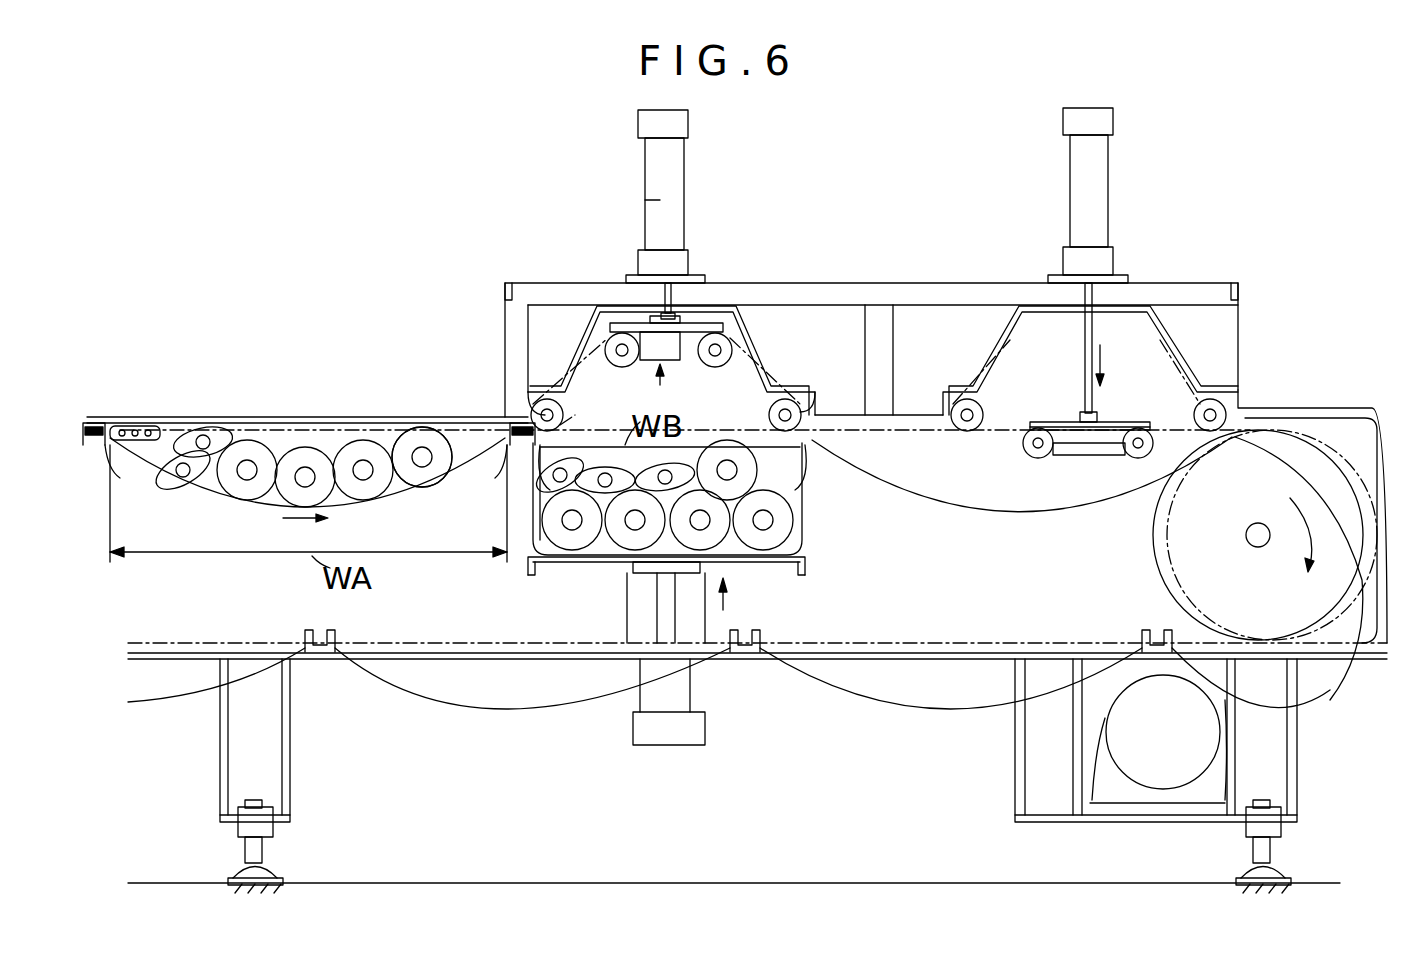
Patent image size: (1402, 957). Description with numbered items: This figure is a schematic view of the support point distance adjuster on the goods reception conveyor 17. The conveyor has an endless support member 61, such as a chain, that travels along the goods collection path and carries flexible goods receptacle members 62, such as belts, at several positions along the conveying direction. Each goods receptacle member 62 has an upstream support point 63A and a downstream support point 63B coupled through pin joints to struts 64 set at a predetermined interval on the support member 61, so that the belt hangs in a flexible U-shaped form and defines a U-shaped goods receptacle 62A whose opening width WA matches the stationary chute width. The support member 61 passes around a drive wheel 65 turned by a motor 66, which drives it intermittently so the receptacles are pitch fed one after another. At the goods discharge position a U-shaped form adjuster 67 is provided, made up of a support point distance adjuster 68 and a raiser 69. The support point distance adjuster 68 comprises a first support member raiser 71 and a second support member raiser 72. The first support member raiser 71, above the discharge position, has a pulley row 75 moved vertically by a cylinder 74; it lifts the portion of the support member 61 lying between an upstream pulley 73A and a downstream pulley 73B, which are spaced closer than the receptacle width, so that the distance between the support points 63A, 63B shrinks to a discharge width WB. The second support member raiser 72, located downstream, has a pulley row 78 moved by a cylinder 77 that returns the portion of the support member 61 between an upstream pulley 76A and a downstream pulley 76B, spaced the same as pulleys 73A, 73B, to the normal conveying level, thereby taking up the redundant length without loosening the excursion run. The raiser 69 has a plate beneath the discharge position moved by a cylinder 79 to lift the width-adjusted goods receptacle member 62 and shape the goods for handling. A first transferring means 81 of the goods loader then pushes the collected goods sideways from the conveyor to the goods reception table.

The goods reception conveyor 17 is at (388, 414).
The endless support member 61 is at (140, 428).
The flexible goods receptacle member 62 is at (200, 472).
The U-shaped goods receptacle 62A is at (460, 472).
The upstream support point 63A is at (500, 455).
The downstream support point 63B is at (113, 455).
The strut 64 is at (95, 425).
The drive wheel 65 is at (1152, 540).
The motor 66 is at (1200, 742).
The U-shaped form adjuster 67 is at (810, 562).
The support point distance adjuster 68 is at (657, 173).
The raiser 69 is at (705, 728).
The first support member raiser 71 is at (655, 240).
The second support member raiser 72 is at (1096, 217).
The upstream pulley 73A is at (800, 400).
The downstream pulley 73B is at (545, 398).
The cylinder 74 is at (652, 200).
The pulley row 75 is at (680, 345).
The upstream pulley 76A is at (1228, 398).
The downstream pulley 76B is at (955, 400).
The cylinder 77 is at (1105, 168).
The pulley row 78 is at (1045, 455).
The cylinder 79 is at (735, 570).
The first transferring means 81 is at (782, 475).